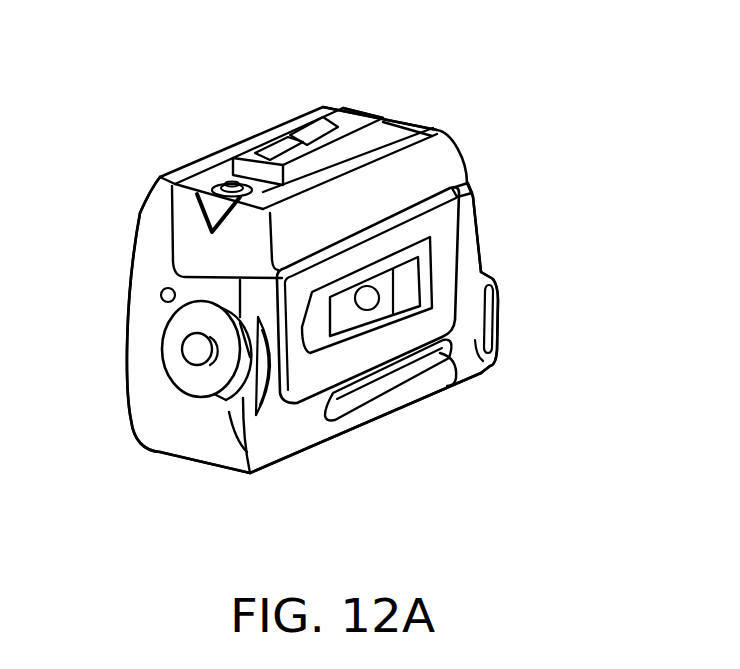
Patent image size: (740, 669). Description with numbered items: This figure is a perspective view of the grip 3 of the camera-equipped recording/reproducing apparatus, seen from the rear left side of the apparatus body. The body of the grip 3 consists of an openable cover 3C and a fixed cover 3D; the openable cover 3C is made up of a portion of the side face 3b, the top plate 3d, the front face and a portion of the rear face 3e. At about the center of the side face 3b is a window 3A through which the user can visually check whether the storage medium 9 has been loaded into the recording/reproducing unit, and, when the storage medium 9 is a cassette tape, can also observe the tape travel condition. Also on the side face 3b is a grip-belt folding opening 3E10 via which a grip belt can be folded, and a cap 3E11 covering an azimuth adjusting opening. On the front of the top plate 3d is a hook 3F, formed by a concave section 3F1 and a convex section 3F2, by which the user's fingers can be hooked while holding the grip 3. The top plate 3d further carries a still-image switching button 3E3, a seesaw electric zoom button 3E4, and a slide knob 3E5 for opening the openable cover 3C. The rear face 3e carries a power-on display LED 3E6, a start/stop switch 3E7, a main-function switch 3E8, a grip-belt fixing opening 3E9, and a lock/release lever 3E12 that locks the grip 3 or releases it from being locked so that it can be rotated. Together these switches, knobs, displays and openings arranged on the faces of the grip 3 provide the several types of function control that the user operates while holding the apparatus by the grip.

The grip 3 is at (160, 99).
The window 3A is at (454, 383).
The side face 3b is at (308, 437).
The openable cover 3C is at (443, 220).
The top plate 3d is at (350, 112).
The fixed cover 3D is at (222, 453).
The rear face 3e is at (137, 256).
The still-image switching button 3E3 is at (227, 182).
The seesaw electric zoom button 3E4 is at (310, 130).
The slide knob 3E5 is at (277, 128).
The power-on display LED 3E6 is at (161, 295).
The start/stop switch 3E7 is at (197, 362).
The main-function switch 3E8 is at (170, 364).
The grip-belt fixing opening 3E9 is at (263, 390).
The grip-belt folding opening 3E10 is at (487, 357).
The cap 3E11 is at (400, 397).
The lock/release lever 3E12 is at (240, 340).
The hook 3F is at (481, 33).
The concave section 3F1 is at (397, 127).
The convex section 3F2 is at (420, 130).
The storage medium 9 is at (390, 284).